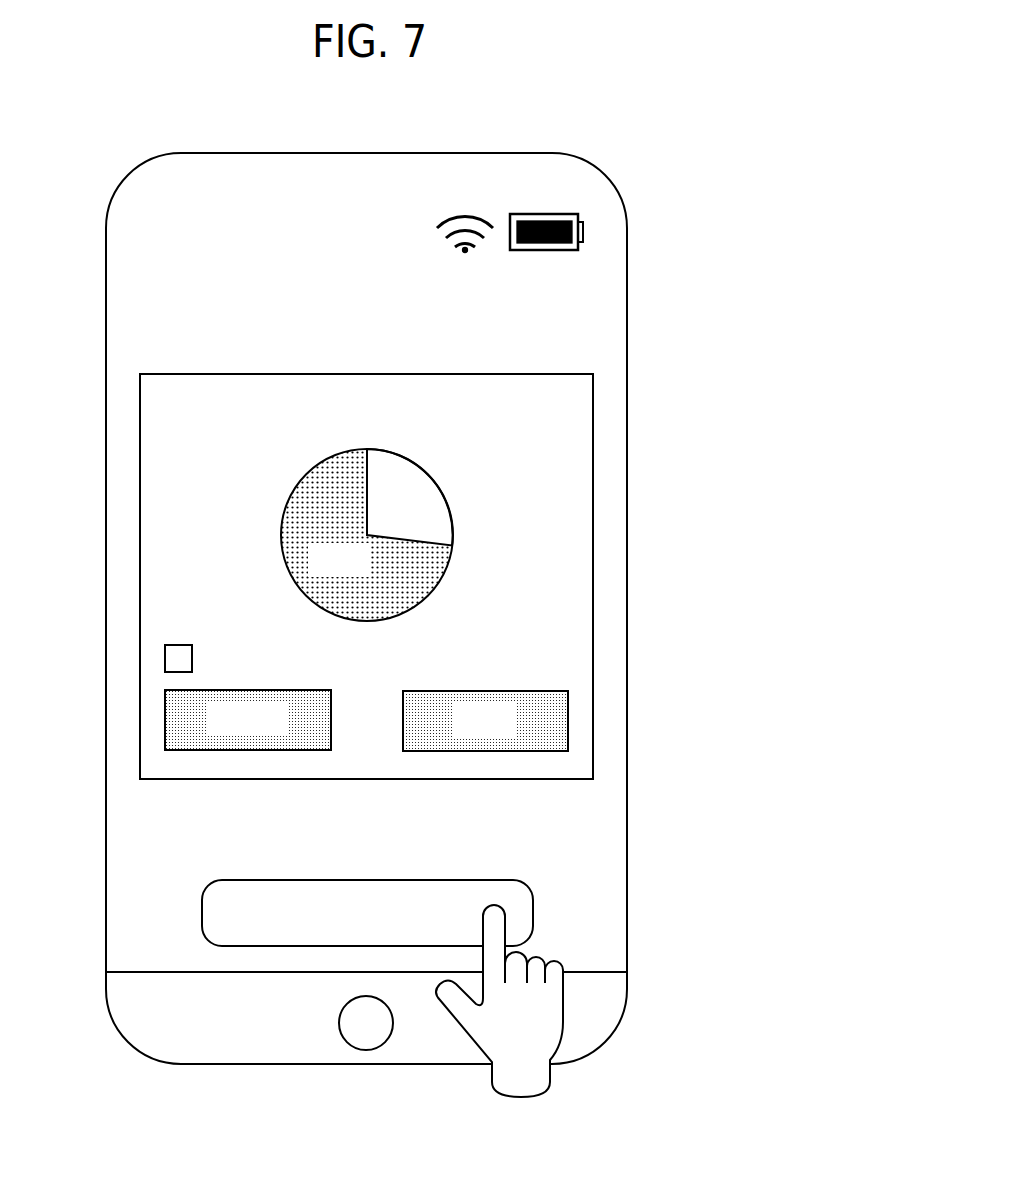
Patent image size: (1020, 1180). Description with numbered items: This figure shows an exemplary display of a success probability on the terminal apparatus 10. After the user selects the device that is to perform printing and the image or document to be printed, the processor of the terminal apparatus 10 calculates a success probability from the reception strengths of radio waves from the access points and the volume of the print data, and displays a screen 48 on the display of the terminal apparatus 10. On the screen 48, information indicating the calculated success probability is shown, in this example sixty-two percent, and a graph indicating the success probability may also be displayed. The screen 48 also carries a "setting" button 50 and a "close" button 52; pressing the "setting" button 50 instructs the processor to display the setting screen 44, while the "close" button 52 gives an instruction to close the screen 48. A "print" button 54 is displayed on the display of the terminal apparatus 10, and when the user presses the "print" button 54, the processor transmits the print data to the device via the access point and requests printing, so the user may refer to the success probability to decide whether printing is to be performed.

The terminal apparatus 10 is at (627, 322).
The screen 48 is at (593, 430).
The "setting" button 50 is at (165, 722).
The "close" button 52 is at (568, 727).
The "print" button 54 is at (533, 912).
The setting screen 44 is at (550, 1072).